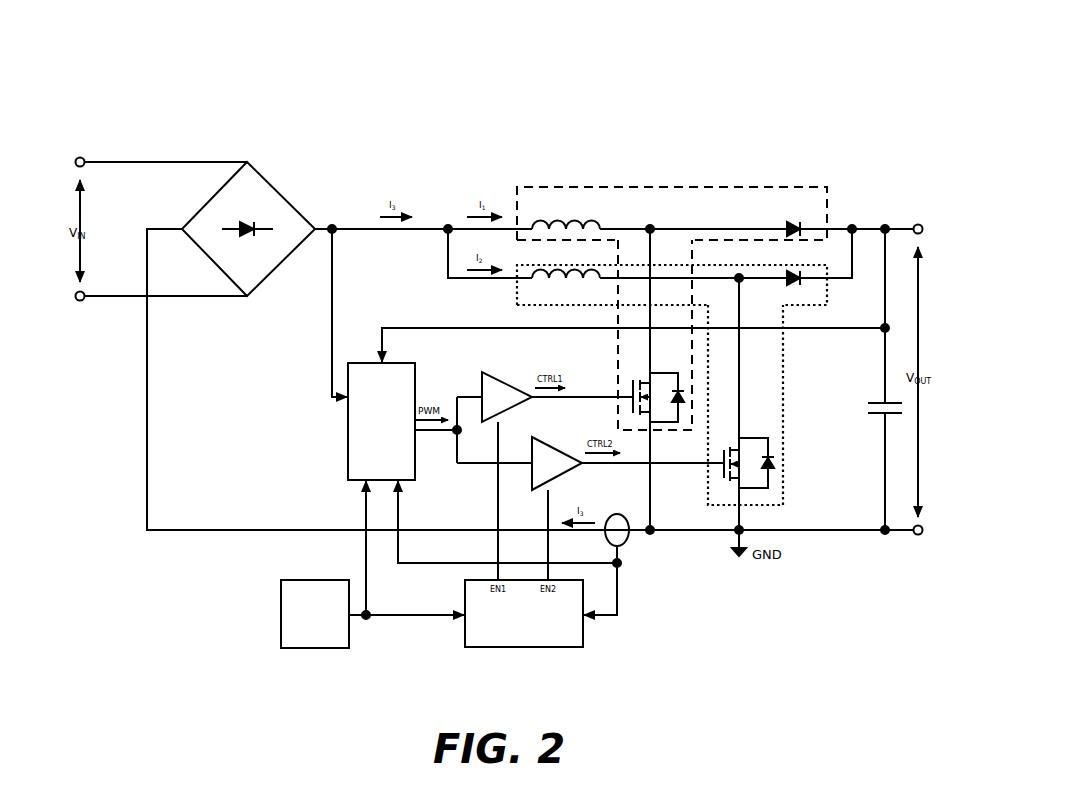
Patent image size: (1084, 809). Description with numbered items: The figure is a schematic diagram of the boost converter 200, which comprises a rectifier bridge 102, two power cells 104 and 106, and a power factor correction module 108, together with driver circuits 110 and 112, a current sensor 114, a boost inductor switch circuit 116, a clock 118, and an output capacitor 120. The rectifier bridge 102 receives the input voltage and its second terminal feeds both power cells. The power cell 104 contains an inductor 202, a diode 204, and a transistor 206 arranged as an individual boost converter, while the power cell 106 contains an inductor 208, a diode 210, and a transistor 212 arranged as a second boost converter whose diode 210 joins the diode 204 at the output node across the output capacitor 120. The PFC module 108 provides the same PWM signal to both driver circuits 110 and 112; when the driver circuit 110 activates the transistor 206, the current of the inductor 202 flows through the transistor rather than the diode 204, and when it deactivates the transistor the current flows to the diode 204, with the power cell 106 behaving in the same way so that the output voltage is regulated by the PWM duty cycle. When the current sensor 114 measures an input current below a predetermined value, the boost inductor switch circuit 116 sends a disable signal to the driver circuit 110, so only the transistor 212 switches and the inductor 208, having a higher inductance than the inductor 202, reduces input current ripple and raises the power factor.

The power factor correction circuit 200 is at (620, 92).
The rectifier bridge 102 is at (273, 187).
The power cell 104 is at (570, 187).
The power cell 106 is at (517, 305).
The power factor correction (PFC) module 108 is at (348, 447).
The driver circuit 110 is at (497, 378).
The driver circuit 112 is at (563, 482).
The current sensor 114 is at (627, 543).
The boost inductor switch circuit 116 is at (527, 647).
The clock 118 is at (281, 613).
The output capacitor 120 is at (883, 417).
The inductor 202 is at (603, 224).
The diode 204 is at (802, 225).
The transistor 206 is at (650, 375).
The inductor 208 is at (533, 277).
The diode 210 is at (786, 276).
The transistor 212 is at (740, 438).